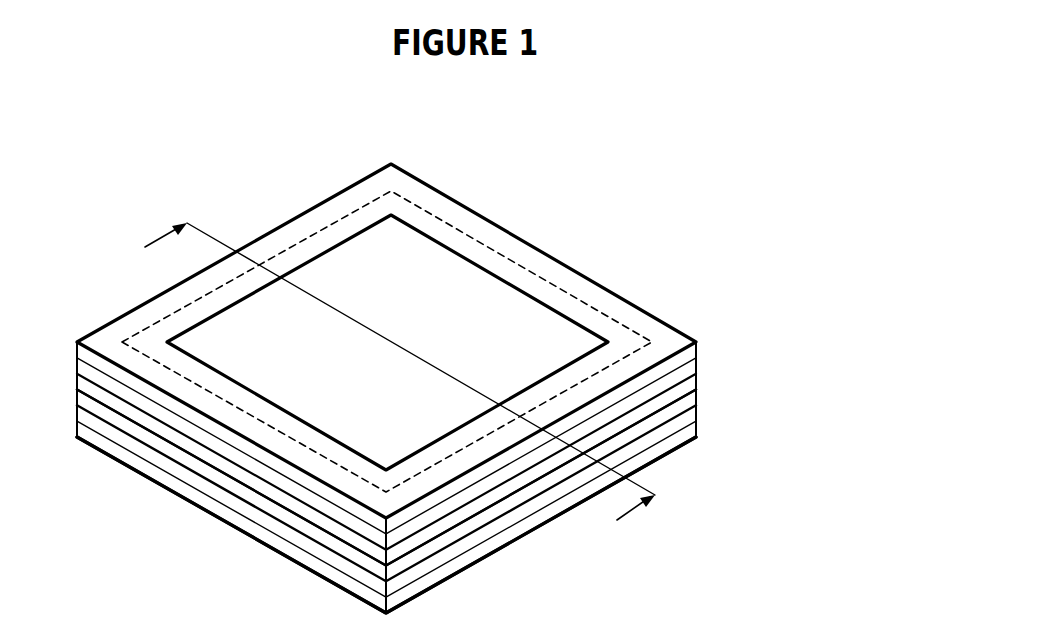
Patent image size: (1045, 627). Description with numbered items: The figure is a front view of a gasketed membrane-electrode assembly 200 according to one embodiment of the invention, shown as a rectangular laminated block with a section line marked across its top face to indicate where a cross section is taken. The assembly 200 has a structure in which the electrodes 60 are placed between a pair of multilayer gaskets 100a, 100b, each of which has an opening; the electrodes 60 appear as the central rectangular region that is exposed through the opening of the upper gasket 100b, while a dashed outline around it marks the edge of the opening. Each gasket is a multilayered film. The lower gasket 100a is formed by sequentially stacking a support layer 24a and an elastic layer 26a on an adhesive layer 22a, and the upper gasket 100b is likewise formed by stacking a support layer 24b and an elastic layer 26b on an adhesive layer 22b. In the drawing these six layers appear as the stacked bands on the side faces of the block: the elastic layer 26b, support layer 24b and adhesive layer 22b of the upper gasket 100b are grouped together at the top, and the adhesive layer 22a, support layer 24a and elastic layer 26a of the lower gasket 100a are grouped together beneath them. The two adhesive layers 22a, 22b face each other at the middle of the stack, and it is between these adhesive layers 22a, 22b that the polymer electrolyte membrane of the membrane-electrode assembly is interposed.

The gasketed membrane-electrode assembly 200 is at (843, 303).
The electrodes 60 is at (482, 298).
The multilayer gasket 100a is at (779, 400).
The multilayer gasket 100b is at (779, 312).
The adhesive layer 22a is at (697, 398).
The support layer 24a is at (697, 415).
The elastic layer 26a is at (697, 432).
The adhesive layer 22b is at (697, 381).
The support layer 24b is at (697, 362).
The elastic layer 26b is at (697, 344).